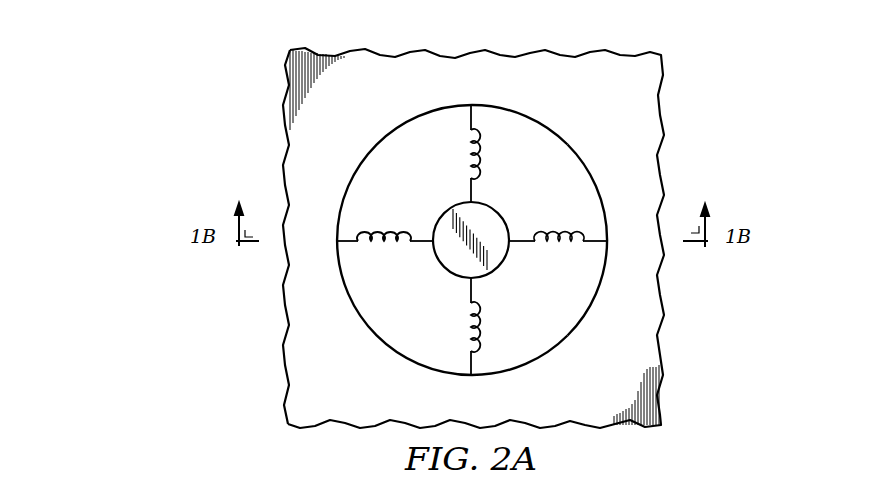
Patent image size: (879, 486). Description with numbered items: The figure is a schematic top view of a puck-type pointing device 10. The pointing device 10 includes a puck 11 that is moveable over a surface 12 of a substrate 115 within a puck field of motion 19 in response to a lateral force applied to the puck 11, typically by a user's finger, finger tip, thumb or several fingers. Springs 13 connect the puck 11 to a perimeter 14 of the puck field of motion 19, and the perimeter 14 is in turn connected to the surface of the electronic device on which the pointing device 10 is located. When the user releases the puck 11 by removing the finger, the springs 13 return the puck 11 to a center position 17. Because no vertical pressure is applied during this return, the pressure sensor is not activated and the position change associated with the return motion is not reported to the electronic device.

The puck-type pointing device 10 is at (712, 72).
The substrate 115 is at (278, 305).
The surface 12 is at (386, 166).
The perimeter 14 is at (556, 357).
The puck 11 is at (443, 214).
The center position 17 is at (440, 275).
The puck field of motion 19 is at (541, 148).
The springs 13 is at (567, 233).